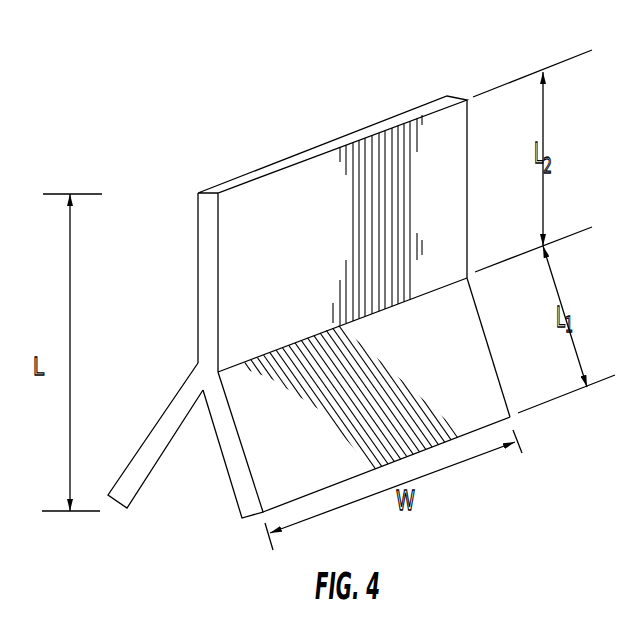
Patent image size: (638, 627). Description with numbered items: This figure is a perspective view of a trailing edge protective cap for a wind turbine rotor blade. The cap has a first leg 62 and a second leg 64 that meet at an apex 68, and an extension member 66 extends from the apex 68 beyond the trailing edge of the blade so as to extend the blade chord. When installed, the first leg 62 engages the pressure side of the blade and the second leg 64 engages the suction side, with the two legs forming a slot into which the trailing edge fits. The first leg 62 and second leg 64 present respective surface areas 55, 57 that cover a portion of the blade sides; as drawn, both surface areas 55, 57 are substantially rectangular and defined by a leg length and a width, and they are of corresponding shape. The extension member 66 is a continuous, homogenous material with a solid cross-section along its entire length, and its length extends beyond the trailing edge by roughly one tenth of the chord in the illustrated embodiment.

The extension member 66 is at (210, 263).
The surface area of second leg 57 is at (452, 310).
The surface area of first leg 55 is at (178, 392).
The first leg 62 is at (152, 444).
The second leg 64 is at (229, 444).
The apex 68 is at (337, 328).